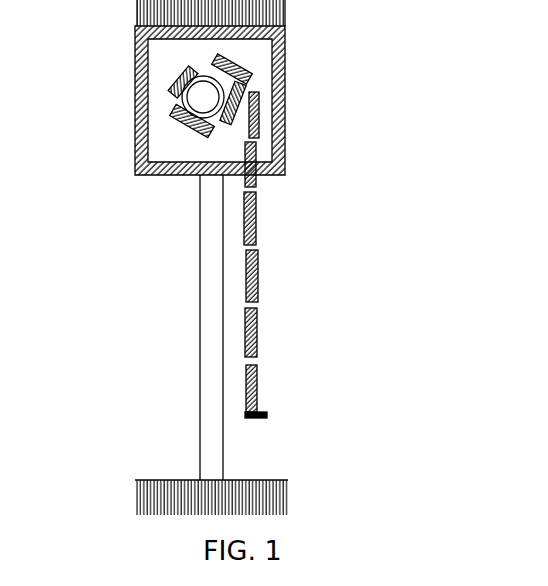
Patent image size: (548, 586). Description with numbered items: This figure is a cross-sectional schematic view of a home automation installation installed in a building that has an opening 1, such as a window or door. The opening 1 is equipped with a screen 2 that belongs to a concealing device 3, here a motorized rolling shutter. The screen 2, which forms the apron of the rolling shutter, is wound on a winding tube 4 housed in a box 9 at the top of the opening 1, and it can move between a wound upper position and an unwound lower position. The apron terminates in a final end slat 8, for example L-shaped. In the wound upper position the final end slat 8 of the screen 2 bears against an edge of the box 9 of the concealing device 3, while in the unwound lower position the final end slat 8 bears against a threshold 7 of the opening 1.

The opening 1 is at (187, 335).
The screen 2 is at (255, 222).
The concealing device 3 is at (285, 295).
The winding tube 4 is at (186, 104).
The threshold 7 is at (175, 480).
The final end slat 8 is at (257, 380).
The box 9 is at (137, 55).